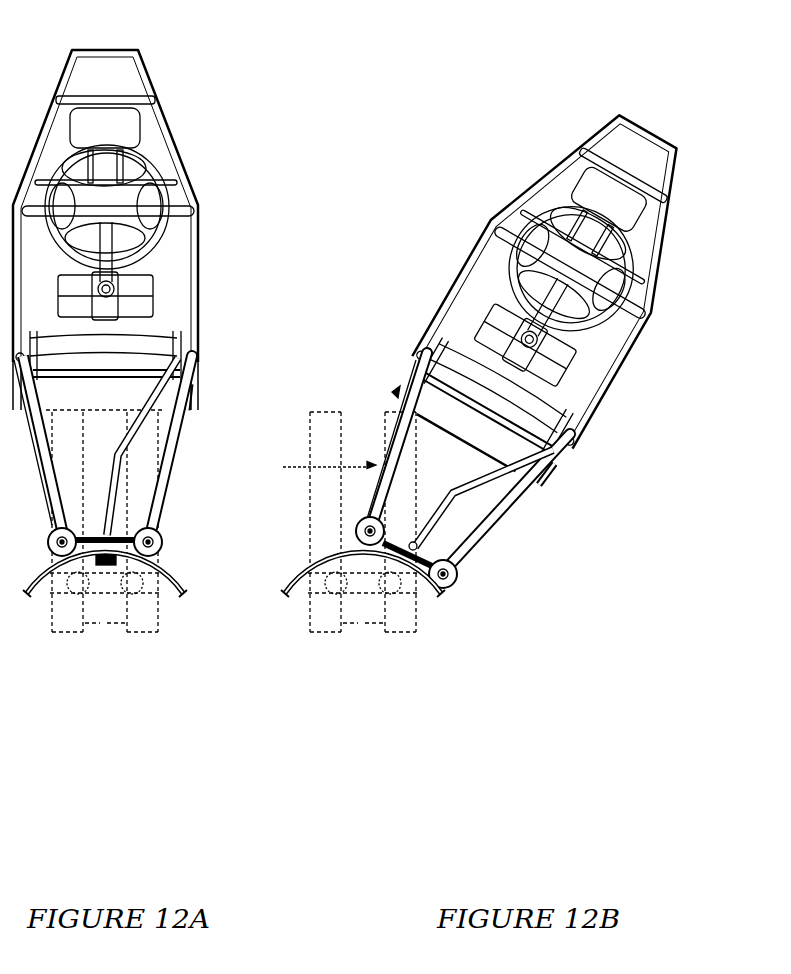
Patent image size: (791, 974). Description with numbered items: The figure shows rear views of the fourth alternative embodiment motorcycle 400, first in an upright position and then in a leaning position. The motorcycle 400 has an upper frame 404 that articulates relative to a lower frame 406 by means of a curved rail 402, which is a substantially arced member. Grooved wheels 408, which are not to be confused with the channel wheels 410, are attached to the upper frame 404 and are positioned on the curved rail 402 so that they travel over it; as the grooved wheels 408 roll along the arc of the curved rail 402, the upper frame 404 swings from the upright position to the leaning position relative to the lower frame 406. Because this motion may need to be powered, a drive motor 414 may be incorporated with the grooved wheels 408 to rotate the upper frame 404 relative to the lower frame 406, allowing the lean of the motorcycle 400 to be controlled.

In FIG. 12A, the motorcycle 400 is at (178, 70).
In FIG. 12B, the motorcycle 400 is at (568, 98).
In FIG. 12A, the curved rail 402 is at (182, 580).
In FIG. 12B, the curved rail 402 is at (283, 566).
In FIG. 12A, the upper frame 404 is at (186, 459).
In FIG. 12A, the lower frame 406 is at (139, 606).
In FIG. 12B, the lower frame 406 is at (338, 607).
In FIG. 12A, the grooved wheels 408 is at (137, 565).
In FIG. 12B, the grooved wheels 408 is at (443, 600).
In FIG. 12A, the channel wheels 410 is at (167, 427).
In FIG. 12B, the channel wheels 410 is at (356, 415).
In FIG. 12A, the drive motor 414 is at (108, 568).
In FIG. 12B, the drive motor 414 is at (400, 580).